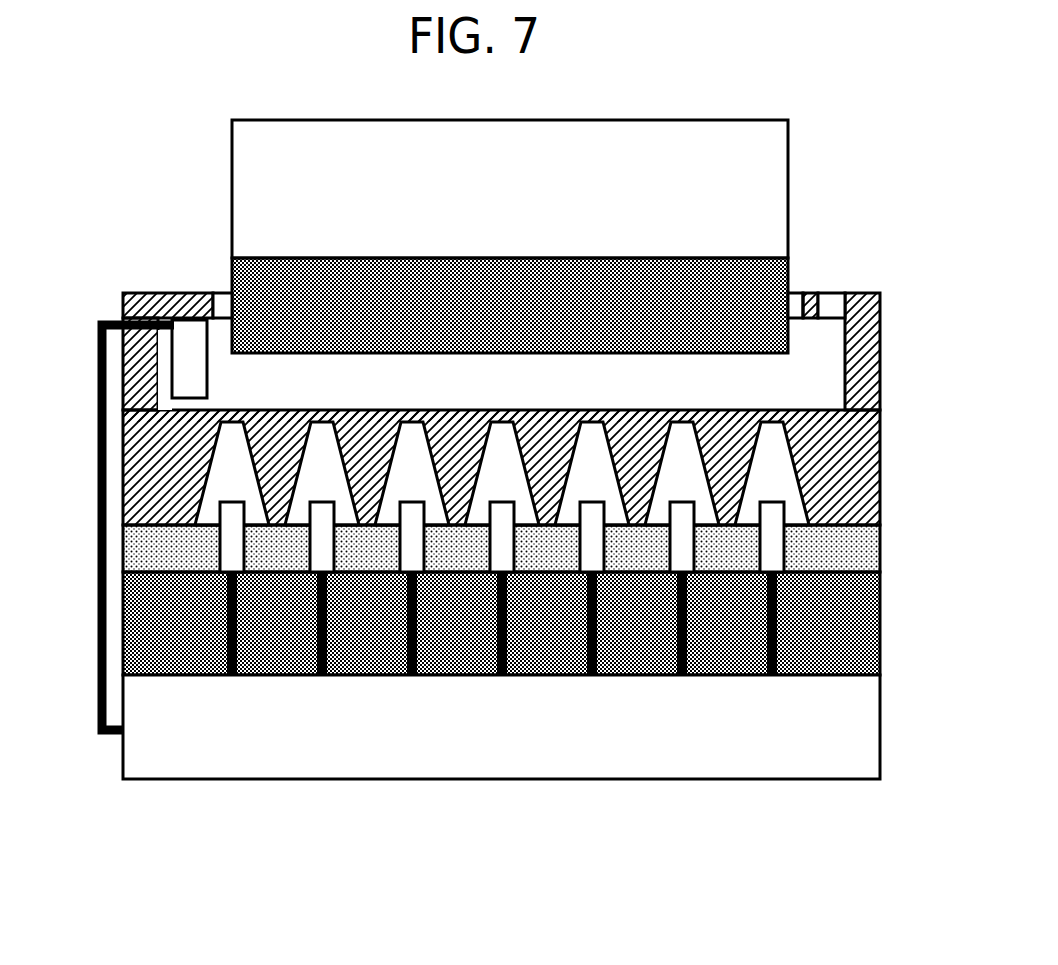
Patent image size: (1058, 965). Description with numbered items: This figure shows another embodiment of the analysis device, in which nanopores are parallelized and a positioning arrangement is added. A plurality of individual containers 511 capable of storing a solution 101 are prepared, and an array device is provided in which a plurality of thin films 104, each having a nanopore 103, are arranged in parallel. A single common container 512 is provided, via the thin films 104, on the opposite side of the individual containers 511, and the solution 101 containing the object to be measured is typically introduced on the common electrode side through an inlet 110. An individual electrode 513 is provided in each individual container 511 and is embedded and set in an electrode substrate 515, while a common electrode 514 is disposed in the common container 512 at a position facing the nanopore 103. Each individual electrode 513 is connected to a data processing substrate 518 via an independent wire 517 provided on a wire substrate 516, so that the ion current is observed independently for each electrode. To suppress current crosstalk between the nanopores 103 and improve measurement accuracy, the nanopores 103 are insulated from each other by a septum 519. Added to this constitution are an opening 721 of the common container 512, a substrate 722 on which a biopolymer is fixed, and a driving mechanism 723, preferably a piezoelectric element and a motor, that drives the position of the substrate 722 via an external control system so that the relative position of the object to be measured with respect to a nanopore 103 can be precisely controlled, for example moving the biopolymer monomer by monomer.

The driving mechanism 723 is at (232, 186).
The substrate 722 is at (232, 268).
The opening 721 is at (797, 308).
The common container 512 is at (140, 292).
The common electrode 514 is at (188, 346).
The thin film 104 is at (168, 410).
The nanopore 103 is at (215, 432).
The inlet 110 is at (832, 306).
The solution 101 is at (830, 360).
The individual container 511 is at (233, 477).
The septum 519 is at (735, 483).
The individual electrode 513 is at (233, 538).
The electrode substrate 515 is at (870, 548).
The wire substrate 516 is at (868, 625).
The independent wire 517 is at (772, 677).
The data processing substrate 518 is at (868, 727).